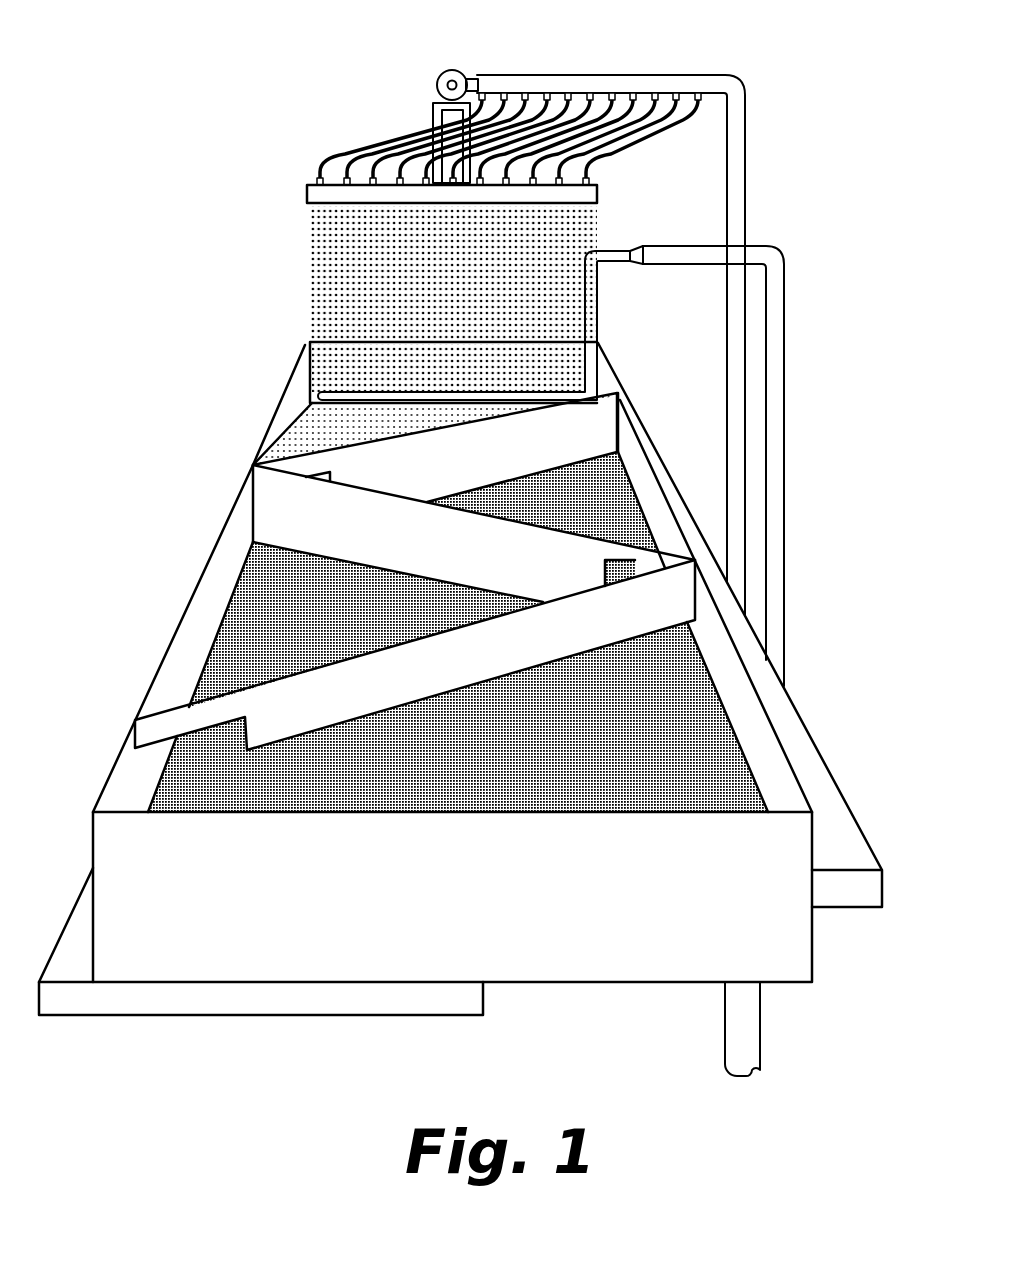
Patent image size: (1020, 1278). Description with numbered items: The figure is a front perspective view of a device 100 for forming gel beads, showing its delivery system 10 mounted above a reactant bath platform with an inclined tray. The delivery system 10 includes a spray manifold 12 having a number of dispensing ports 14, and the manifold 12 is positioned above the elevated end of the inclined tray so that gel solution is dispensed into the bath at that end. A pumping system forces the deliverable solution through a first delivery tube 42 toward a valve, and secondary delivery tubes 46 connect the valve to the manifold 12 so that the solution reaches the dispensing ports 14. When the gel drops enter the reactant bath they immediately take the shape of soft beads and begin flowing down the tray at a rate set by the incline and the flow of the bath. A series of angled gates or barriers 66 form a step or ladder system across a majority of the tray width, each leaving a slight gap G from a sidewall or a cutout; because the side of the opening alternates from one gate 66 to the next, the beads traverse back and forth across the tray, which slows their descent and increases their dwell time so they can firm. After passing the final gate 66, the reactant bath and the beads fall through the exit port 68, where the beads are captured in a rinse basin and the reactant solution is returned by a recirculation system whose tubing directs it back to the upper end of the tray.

The delivery system 10 is at (430, 70).
The spray manifold 12 is at (596, 190).
The dispensing ports 14 is at (380, 245).
The first delivery tube 42 is at (742, 78).
The secondary delivery tubes 46 is at (692, 150).
The angled gates or barriers 66 is at (560, 443).
The gap G is at (320, 476).
The exit port 68 is at (745, 1040).
The device 100 is at (238, 436).